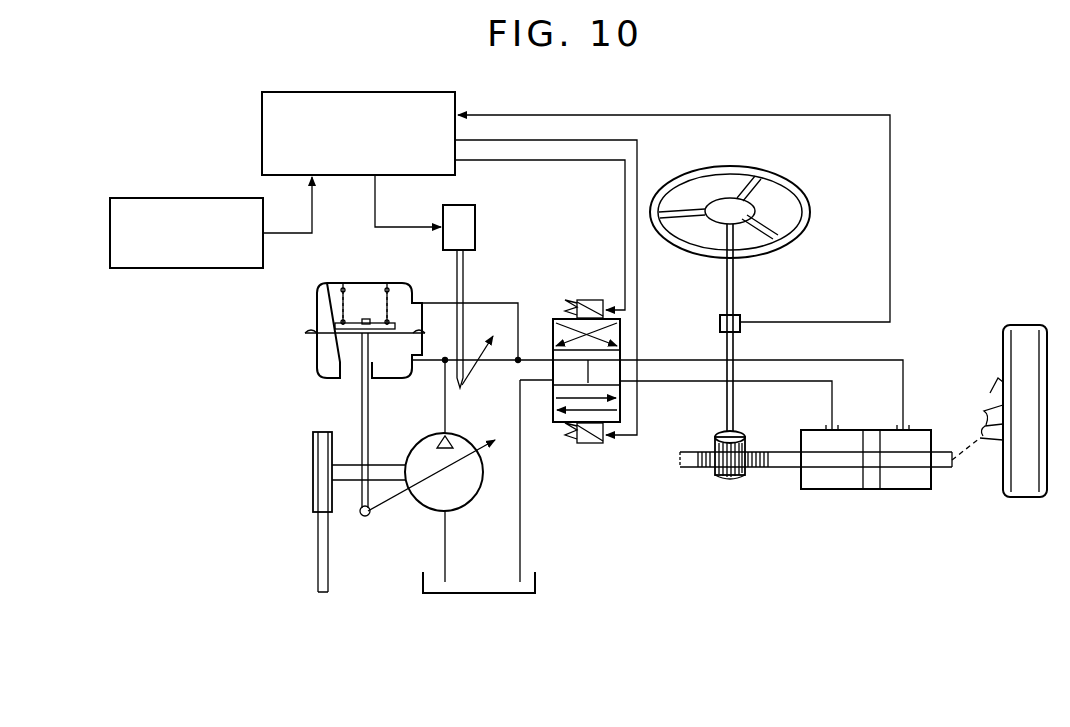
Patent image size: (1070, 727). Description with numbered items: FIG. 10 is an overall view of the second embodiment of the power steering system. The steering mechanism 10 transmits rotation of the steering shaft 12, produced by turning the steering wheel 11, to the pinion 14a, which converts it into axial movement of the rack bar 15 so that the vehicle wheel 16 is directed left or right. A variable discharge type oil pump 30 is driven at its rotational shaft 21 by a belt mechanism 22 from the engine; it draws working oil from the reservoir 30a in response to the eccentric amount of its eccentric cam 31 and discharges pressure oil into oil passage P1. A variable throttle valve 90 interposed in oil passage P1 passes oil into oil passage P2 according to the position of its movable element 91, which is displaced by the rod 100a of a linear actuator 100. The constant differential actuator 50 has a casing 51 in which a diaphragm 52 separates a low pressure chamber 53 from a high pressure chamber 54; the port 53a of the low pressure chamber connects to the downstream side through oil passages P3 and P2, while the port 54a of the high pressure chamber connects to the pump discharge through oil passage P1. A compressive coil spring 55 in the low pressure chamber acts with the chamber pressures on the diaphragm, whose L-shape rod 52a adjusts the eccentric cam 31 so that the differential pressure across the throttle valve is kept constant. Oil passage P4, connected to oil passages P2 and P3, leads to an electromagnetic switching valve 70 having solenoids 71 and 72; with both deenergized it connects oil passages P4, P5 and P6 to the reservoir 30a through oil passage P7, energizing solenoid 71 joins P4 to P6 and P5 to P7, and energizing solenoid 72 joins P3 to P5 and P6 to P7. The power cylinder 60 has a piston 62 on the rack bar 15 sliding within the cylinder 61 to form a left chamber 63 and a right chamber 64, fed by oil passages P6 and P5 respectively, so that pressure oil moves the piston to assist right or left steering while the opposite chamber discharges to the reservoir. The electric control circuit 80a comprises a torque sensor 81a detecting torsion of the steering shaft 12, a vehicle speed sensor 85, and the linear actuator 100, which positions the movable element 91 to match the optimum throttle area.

The steering mechanism 10 is at (700, 402).
The steering wheel 11 is at (786, 182).
The steering shaft 12 is at (725, 274).
The pinion 14a is at (728, 478).
The rack bar 15 is at (781, 470).
The vehicle wheel 16 is at (1025, 325).
The rotational shaft 21 is at (346, 484).
The belt mechanism 22 is at (312, 515).
The variable discharge type oil pump 30 is at (476, 501).
The reservoir 30a is at (485, 595).
The eccentric cam 31 is at (488, 438).
The constant differential actuator 50 is at (347, 318).
The casing 51 is at (316, 301).
The diaphragm 52 is at (388, 288).
The L-shape rod 52a is at (362, 428).
The low pressure chamber 53 is at (360, 287).
The port 53a is at (412, 299).
The high pressure chamber 54 is at (336, 386).
The port 54a is at (375, 420).
The compressive coil spring 55 is at (341, 288).
The power cylinder 60 is at (872, 468).
The cylinder 61 is at (914, 490).
The piston 62 is at (872, 490).
The left chamber 63 is at (821, 490).
The right chamber 64 is at (916, 428).
The electromagnetic switching valve 70 is at (580, 290).
The solenoid 71 is at (575, 445).
The solenoid 72 is at (595, 298).
The electric control circuit 80a is at (419, 91).
The torque sensor 81a is at (742, 318).
The vehicle speed sensor 85 is at (193, 197).
The variable throttle valve 90 is at (472, 350).
The movable element 91 is at (503, 348).
The linear actuator 100 is at (476, 222).
The rod 100a is at (465, 272).
The oil passage P1 is at (444, 403).
The oil passage P2 is at (503, 362).
The oil passage P3 is at (502, 303).
The oil passage P4 is at (536, 397).
The oil passage P5 is at (790, 360).
The oil passage P6 is at (833, 398).
The oil passage P7 is at (522, 540).